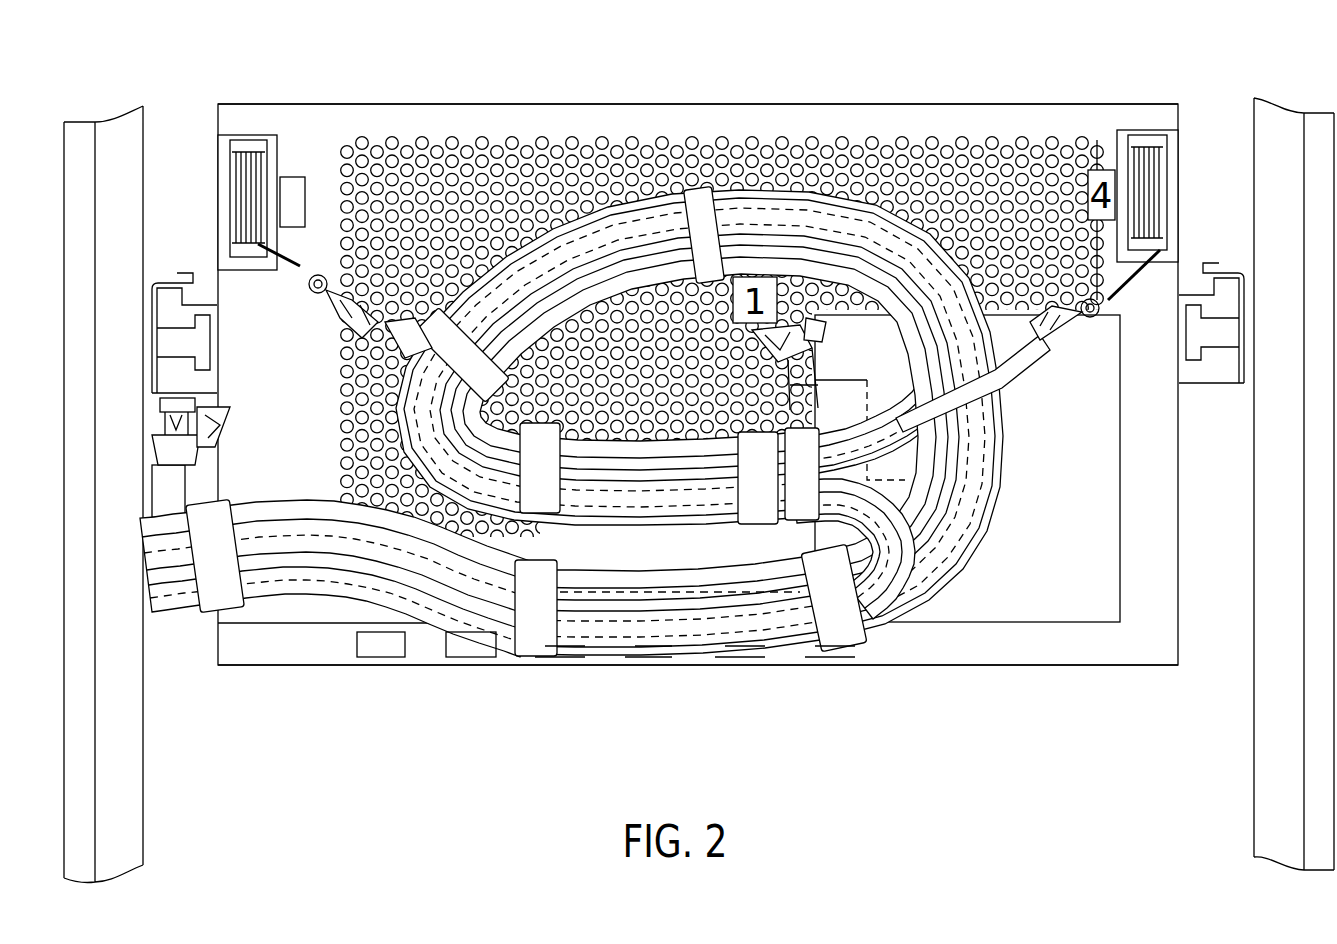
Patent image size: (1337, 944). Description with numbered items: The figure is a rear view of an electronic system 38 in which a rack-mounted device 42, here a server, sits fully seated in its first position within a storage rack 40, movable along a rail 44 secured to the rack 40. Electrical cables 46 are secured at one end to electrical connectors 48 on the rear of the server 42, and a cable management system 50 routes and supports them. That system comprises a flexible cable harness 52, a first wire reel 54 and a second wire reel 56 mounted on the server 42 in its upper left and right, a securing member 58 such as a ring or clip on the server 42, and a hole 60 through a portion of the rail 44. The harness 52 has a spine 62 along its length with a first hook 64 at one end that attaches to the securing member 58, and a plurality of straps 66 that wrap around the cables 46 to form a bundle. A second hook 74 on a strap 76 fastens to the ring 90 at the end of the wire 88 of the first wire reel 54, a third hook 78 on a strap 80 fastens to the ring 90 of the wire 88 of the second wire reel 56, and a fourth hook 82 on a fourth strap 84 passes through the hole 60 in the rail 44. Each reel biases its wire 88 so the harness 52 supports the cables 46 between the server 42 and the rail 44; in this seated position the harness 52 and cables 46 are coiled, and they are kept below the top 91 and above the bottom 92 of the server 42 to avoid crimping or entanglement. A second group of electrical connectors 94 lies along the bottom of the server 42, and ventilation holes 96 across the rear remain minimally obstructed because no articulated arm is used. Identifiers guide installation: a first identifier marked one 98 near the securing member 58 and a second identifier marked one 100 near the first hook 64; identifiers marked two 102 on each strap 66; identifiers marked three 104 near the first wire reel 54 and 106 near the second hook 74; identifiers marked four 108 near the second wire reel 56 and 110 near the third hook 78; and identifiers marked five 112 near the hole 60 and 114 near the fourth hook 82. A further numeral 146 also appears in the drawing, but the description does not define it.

The electronic system 38 is at (838, 60).
The storage rack 40 is at (68, 328).
The rack-mounted device 42 is at (698, 352).
The rail 44 is at (185, 273).
The electrical cables 46 is at (965, 485).
The electrical connectors 48 is at (965, 545).
The cable management system 50 is at (1010, 502).
The cable harness 52 is at (732, 634).
The first wire reel 54 is at (250, 130).
The second wire reel 56 is at (1145, 135).
The securing member 58 is at (958, 320).
The hole 60 is at (150, 410).
The spine 62 is at (660, 622).
The first hook 64 is at (808, 346).
The straps 66 is at (740, 232).
The second hook 74 is at (345, 304).
The strap 76 is at (400, 436).
The third hook 78 is at (1075, 333).
The strap 80 is at (992, 394).
The fourth hook 82 is at (205, 392).
The fourth strap 84 is at (222, 592).
The wire 88 is at (280, 272).
The ring 90 is at (336, 278).
The top 91 is at (988, 103).
The bottom 92 is at (1115, 666).
The second group of electrical connectors 94 is at (470, 652).
The ventilation holes 96 is at (390, 138).
The first identifier marked "1" 98 is at (800, 292).
The second identifier marked "1" 100 is at (560, 268).
The first identifier marked "2" 102 is at (706, 232).
The first identifier marked "3" 104 is at (303, 190).
The second identifier marked "3" 106 is at (385, 325).
The first identifier marked "4" 108 is at (1097, 170).
The second identifier marked "4" 110 is at (1070, 402).
The first identifier marked "5" 112 is at (150, 493).
The second identifier marked "5" 114 is at (225, 426).
The cable 146 is at (520, 250).